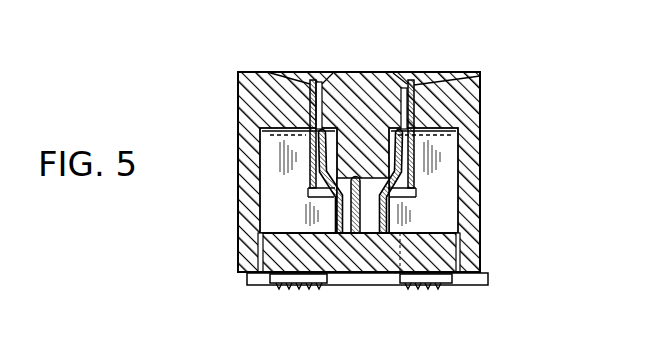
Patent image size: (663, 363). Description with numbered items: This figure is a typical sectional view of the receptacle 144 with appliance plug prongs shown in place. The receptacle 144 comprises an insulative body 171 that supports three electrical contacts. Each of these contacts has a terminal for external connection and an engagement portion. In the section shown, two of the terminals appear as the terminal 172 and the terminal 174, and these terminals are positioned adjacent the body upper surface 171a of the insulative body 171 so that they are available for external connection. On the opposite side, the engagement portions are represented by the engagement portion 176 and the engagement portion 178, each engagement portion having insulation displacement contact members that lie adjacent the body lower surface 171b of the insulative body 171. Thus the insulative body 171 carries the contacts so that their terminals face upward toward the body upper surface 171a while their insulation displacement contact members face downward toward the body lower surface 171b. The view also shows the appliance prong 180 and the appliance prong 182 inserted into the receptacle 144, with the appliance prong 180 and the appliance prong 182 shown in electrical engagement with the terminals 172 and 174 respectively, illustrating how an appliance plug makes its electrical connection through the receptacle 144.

The receptacle 144 is at (482, 178).
The insulative body 171 is at (240, 182).
The body upper surface 171a is at (252, 70).
The body lower surface 171b is at (364, 284).
The terminal 172 is at (320, 188).
The terminal 174 is at (399, 188).
The engagement portion 176 is at (285, 286).
The engagement portion 178 is at (437, 287).
The appliance prong 180 is at (308, 84).
The appliance prong 182 is at (482, 80).